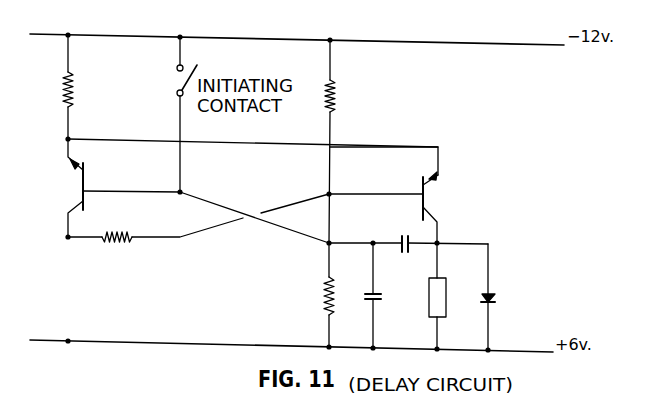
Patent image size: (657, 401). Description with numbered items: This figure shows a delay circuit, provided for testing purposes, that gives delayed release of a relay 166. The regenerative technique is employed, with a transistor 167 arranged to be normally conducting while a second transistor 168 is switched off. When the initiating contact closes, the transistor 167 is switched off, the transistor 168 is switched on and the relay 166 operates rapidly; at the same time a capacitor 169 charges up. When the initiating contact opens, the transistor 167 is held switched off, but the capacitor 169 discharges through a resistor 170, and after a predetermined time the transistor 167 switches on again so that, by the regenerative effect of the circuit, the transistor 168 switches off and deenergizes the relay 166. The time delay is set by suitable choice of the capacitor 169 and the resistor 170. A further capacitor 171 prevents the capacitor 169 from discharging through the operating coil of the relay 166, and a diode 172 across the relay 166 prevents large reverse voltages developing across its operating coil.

The relay 166 is at (430, 286).
The transistor 167 is at (78, 195).
The second transistor 168 is at (457, 206).
The capacitor 169 is at (380, 300).
The resistor 170 is at (324, 292).
The further capacitor 171 is at (400, 238).
The diode 172 is at (493, 294).